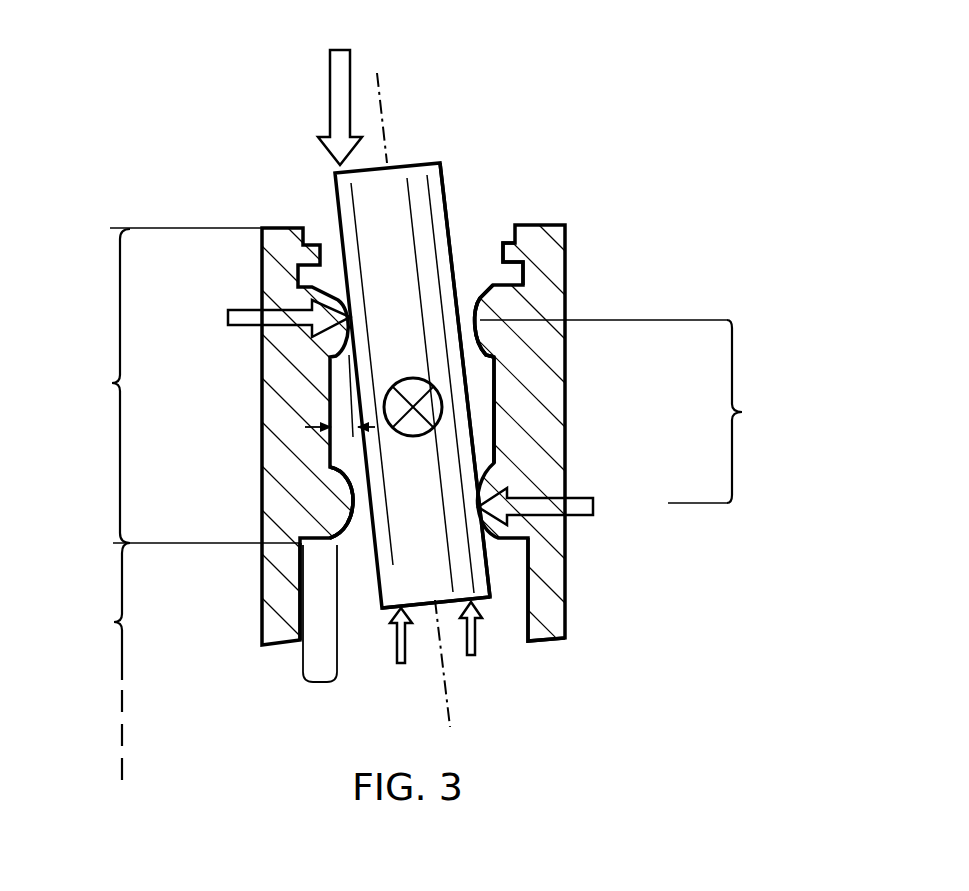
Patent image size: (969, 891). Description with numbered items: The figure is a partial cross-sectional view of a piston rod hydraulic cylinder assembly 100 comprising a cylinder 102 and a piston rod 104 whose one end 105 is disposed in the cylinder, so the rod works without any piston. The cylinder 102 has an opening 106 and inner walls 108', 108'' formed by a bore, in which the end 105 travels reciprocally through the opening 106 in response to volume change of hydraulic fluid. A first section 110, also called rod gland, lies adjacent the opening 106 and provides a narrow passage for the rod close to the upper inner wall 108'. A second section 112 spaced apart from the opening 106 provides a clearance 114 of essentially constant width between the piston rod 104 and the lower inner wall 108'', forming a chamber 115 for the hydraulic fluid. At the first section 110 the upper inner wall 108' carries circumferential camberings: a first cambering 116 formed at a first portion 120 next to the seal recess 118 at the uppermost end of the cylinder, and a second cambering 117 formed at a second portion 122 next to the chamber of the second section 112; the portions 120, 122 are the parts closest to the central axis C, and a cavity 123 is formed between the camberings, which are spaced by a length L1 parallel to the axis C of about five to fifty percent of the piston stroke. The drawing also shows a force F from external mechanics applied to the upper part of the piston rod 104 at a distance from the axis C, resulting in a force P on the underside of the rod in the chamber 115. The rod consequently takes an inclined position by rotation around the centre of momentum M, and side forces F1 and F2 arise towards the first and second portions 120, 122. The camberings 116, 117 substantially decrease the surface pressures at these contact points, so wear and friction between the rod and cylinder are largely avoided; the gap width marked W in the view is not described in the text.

The piston rod hydraulic cylinder assembly 100 is at (549, 71).
The cylinder 102 is at (551, 250).
The piston rod 104 is at (410, 271).
The end of piston rod 105 is at (407, 573).
The opening 106 is at (476, 206).
The upper inner wall 108' is at (572, 424).
The lower inner wall 108'' is at (548, 616).
The first section 110 is at (163, 385).
The second section 112 is at (183, 667).
The clearance 114 is at (324, 632).
The chamber 115 is at (320, 580).
The first cambering 116 is at (486, 320).
The second cambering 117 is at (341, 500).
The recess 118 is at (517, 272).
The first portion 120 is at (486, 320).
The second portion 122 is at (341, 500).
The cavity 123 is at (483, 404).
The central axis C is at (383, 128).
The force F is at (340, 91).
The first side force F1 is at (268, 318).
The second side force F2 is at (558, 507).
The length L1 is at (628, 411).
The centre of momentum M is at (390, 438).
The force P is at (436, 652).
The gap width W is at (340, 444).